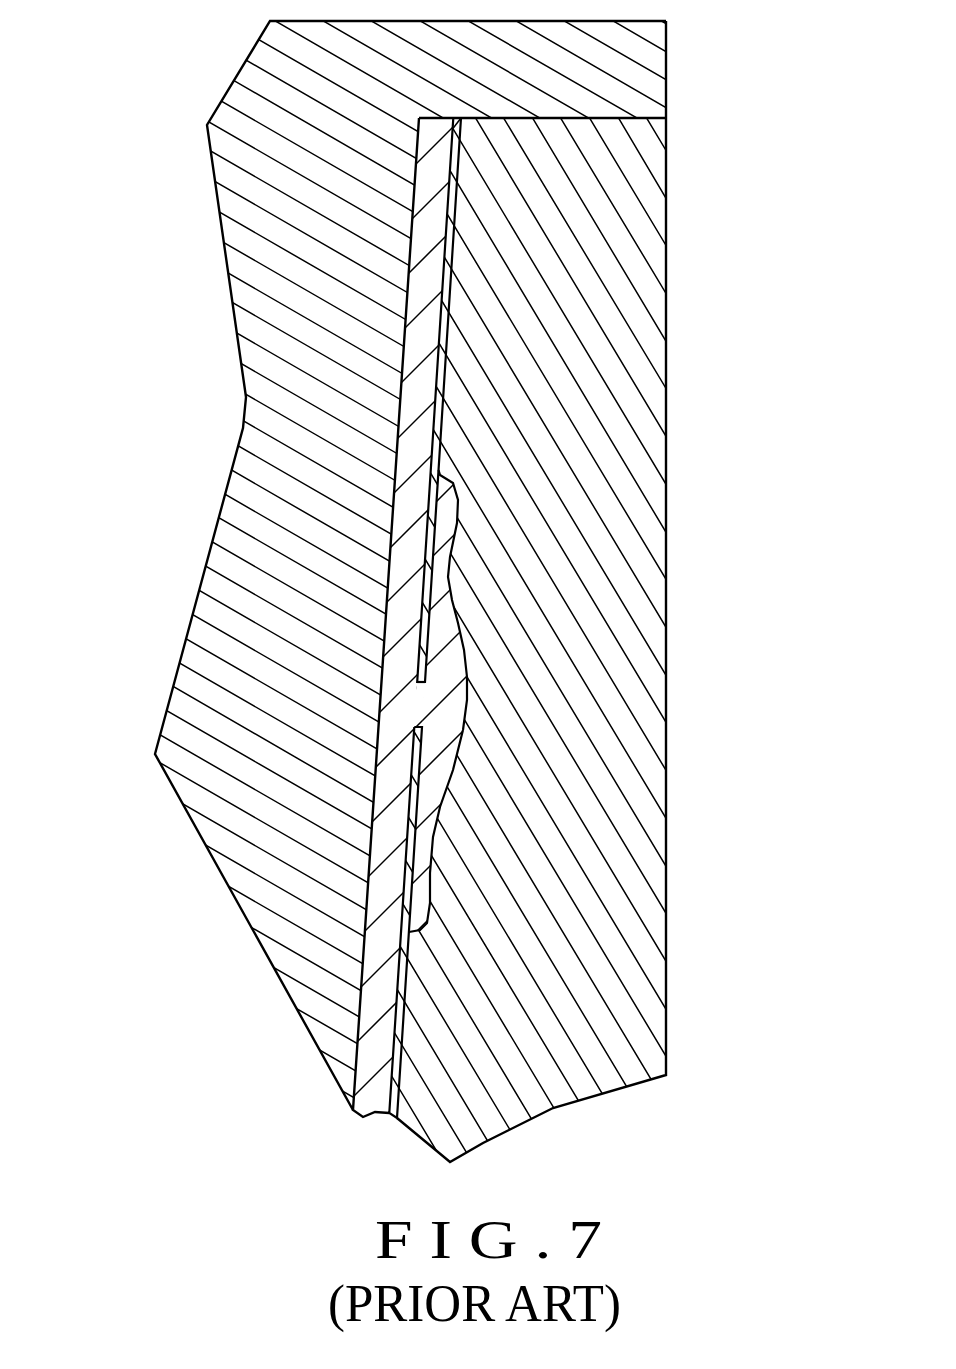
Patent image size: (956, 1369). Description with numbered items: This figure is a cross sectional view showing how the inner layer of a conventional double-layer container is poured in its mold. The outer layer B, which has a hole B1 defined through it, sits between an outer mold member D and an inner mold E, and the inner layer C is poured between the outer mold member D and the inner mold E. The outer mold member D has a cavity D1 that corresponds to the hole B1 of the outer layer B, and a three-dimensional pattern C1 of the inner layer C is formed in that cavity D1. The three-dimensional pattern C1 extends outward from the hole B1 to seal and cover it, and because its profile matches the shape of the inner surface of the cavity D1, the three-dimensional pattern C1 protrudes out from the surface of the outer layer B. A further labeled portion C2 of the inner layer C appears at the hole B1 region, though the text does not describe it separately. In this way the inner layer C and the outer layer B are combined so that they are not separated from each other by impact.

The outer layer B is at (401, 1020).
The hole B1 is at (425, 668).
The inner layer C is at (367, 1050).
The 3-D pattern C1 is at (453, 702).
The gap filler portion C2 is at (423, 698).
The outer mold member D is at (648, 676).
The cavity D1 is at (433, 845).
The inner mold E is at (268, 875).